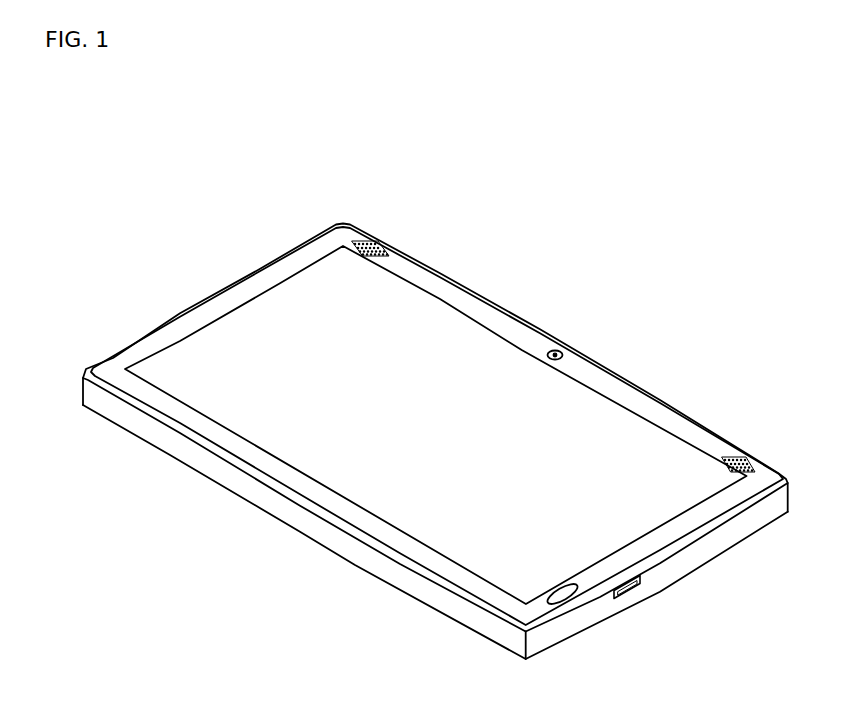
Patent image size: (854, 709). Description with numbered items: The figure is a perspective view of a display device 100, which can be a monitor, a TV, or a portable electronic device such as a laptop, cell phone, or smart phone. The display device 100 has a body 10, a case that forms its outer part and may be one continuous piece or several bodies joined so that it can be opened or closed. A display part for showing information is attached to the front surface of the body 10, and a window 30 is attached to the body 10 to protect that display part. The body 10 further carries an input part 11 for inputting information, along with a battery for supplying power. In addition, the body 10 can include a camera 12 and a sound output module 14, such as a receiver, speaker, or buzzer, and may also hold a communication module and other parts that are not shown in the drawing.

The display device 100 is at (204, 257).
The body 10 is at (621, 393).
The input part 11 is at (568, 595).
The camera 12 is at (556, 351).
The sound output module 14 is at (373, 243).
The window 30 is at (665, 440).